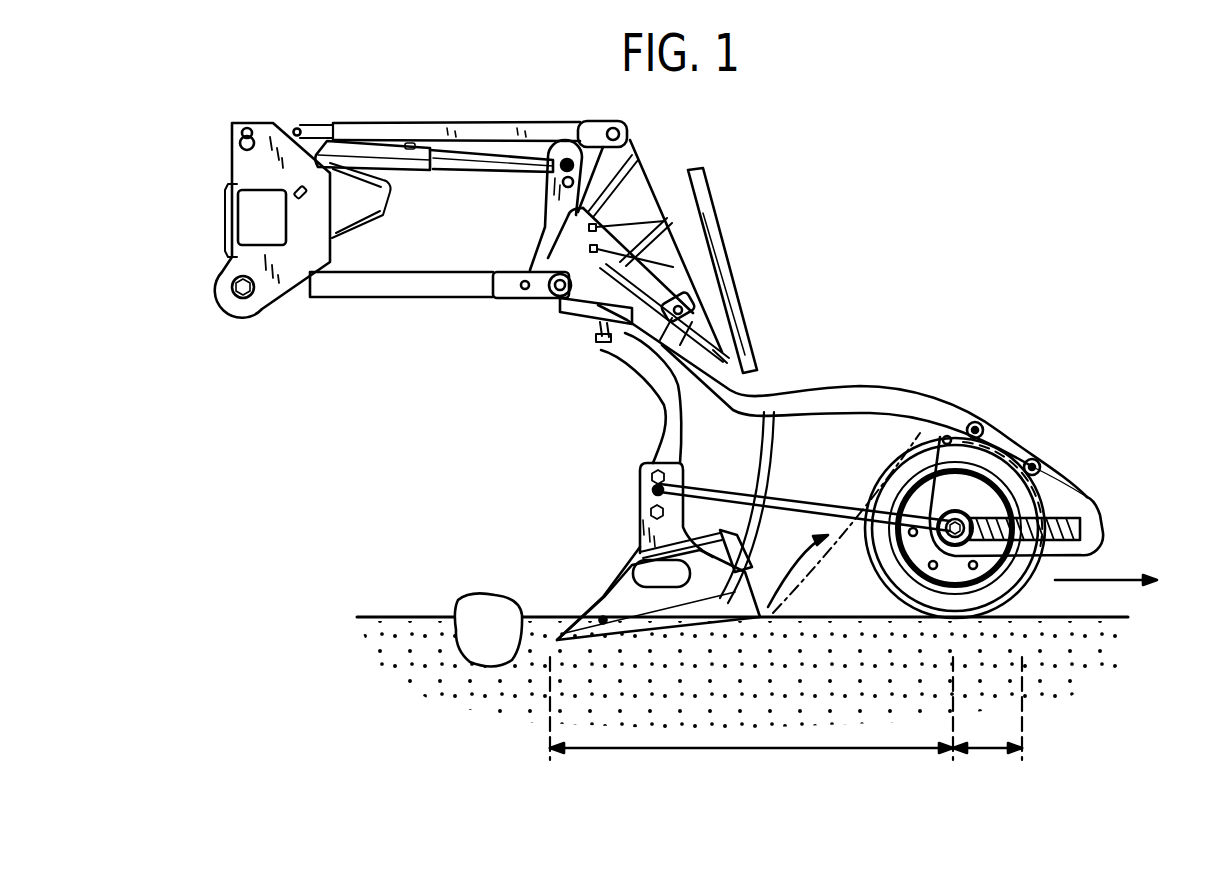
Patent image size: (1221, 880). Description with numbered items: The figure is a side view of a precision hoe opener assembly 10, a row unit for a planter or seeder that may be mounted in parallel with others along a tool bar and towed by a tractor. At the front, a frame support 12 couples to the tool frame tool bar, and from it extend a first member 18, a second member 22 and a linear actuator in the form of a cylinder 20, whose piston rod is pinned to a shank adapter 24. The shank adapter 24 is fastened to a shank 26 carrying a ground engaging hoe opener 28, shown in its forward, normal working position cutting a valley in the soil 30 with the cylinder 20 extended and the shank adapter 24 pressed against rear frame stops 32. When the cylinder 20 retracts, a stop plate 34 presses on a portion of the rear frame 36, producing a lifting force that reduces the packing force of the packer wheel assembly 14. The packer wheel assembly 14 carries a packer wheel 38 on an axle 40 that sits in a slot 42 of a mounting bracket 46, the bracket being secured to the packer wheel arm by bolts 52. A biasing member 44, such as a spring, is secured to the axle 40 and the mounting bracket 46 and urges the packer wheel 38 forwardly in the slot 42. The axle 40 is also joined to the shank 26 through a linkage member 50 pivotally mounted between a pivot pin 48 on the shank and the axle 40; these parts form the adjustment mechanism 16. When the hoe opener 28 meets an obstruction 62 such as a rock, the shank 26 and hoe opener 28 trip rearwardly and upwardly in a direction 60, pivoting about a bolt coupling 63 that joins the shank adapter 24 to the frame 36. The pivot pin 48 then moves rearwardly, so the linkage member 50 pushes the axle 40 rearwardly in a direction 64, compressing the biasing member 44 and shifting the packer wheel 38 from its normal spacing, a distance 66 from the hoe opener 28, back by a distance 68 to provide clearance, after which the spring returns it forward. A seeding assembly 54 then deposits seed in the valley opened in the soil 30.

The precision hoe opener assembly 10 is at (336, 77).
The frame support 12 is at (232, 123).
The packer wheel assembly 14 is at (999, 387).
The adjustment mechanism 16 is at (965, 567).
The first member 18 is at (500, 127).
The cylinder 20 is at (385, 147).
The second member 22 is at (435, 290).
The shank adapter 24 is at (550, 232).
The shank 26 is at (657, 436).
The hoe opener 28 is at (607, 598).
The soil 30 is at (373, 631).
The rear frame stops 32 is at (673, 267).
The stop plate 34 is at (630, 322).
The rear frame 36 is at (640, 175).
The packer wheel 38 is at (915, 455).
The axle 40 is at (936, 513).
The slot 42 is at (1077, 513).
The biasing member 44 is at (1100, 523).
The mounting bracket 46 is at (948, 435).
The pivot pin 48 is at (651, 489).
The linkage member 50 is at (752, 492).
The bolts 52 is at (1032, 460).
The seeding assembly 54 is at (757, 352).
The direction 60 is at (785, 577).
The obstruction 62 is at (468, 655).
The bolt coupling 63 is at (548, 296).
The direction 64 is at (1120, 580).
The distance 66 is at (750, 750).
The distance 68 is at (988, 750).